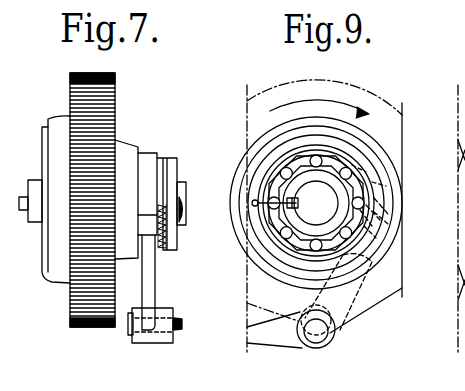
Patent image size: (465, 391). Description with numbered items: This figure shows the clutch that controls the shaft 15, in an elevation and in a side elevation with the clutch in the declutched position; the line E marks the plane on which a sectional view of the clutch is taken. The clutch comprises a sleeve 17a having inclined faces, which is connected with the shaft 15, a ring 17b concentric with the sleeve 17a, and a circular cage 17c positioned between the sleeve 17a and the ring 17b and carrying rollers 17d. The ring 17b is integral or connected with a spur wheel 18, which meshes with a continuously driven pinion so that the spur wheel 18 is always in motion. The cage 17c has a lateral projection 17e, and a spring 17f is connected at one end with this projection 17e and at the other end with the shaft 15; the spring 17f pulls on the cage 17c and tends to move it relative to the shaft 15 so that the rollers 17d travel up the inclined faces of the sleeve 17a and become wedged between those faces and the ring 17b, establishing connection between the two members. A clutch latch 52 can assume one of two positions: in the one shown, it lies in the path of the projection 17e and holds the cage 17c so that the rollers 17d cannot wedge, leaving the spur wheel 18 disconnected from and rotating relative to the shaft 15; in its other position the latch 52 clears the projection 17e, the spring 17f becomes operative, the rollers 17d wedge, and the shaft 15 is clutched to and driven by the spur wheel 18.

In FIG. 7, the spur wheel 18 is at (88, 273).
In FIG. 9, the spur wheel 18 is at (460, 103).
In FIG. 7, the lateral projection 17e is at (145, 217).
In FIG. 9, the lateral projection 17e is at (372, 215).
In FIG. 7, the shaft 15 is at (192, 203).
In FIG. 7, the spring 17f is at (163, 228).
In FIG. 7, the clutch latch 52 is at (154, 292).
In FIG. 9, the clutch latch 52 is at (338, 315).
In FIG. 9, the rollers 17d is at (322, 158).
In FIG. 9, the ring 17b is at (352, 160).
In FIG. 9, the sleeve 17a is at (362, 184).
In FIG. 9, the circular cage 17c is at (340, 188).
In FIG. 9, the section line E— E is at (407, 245).